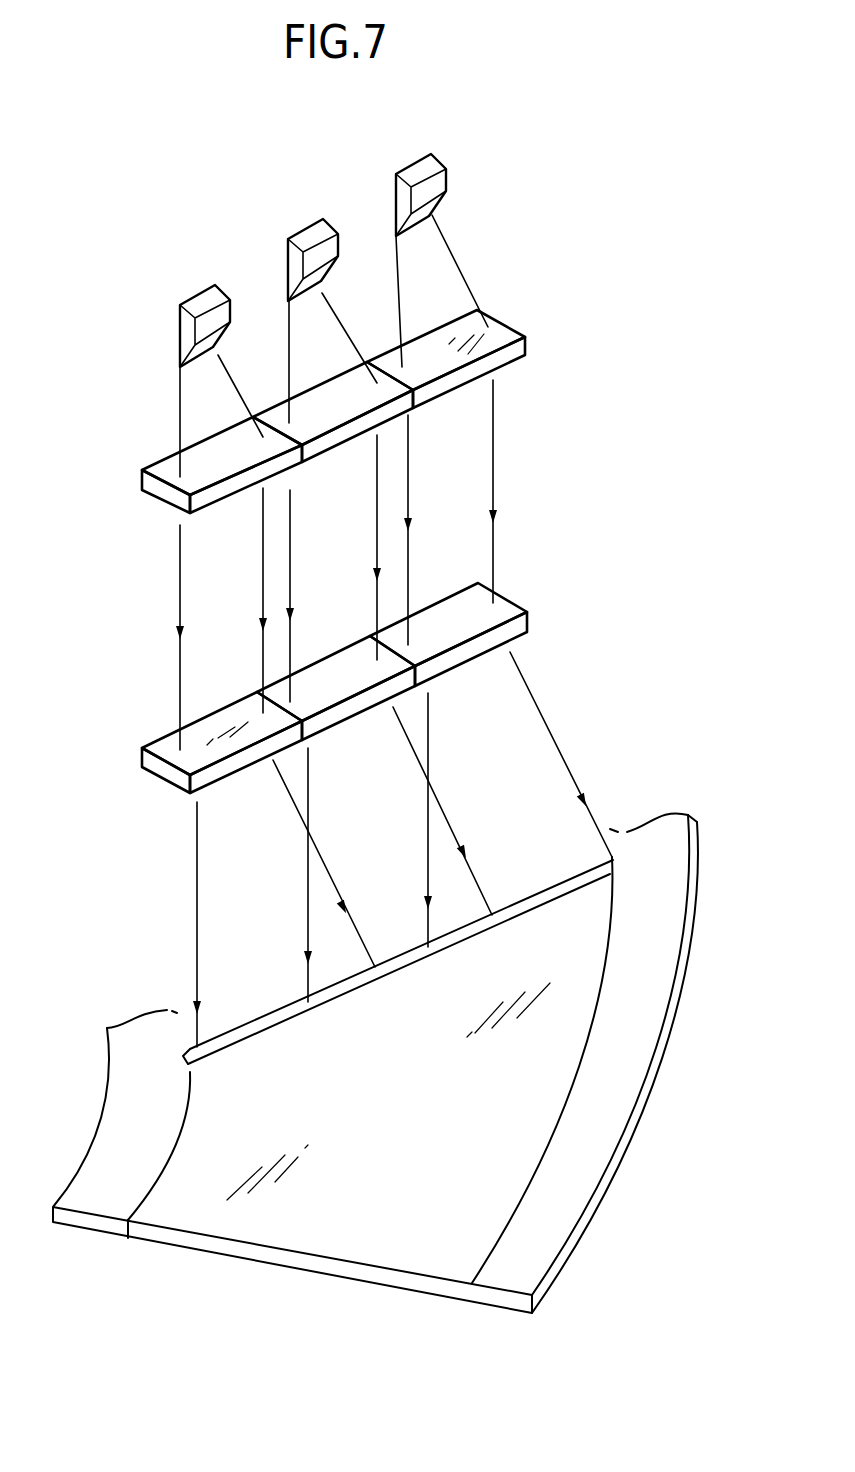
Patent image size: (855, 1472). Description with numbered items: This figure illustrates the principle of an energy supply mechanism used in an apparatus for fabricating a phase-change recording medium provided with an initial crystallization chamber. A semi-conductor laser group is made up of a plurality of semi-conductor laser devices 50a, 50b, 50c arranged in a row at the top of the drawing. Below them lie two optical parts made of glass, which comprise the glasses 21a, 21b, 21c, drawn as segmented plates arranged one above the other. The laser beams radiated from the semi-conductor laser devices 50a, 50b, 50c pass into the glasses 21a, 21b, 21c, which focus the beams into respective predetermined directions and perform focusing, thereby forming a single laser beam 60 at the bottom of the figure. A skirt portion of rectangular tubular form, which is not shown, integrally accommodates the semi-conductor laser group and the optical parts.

The semi-conductor laser device 50a is at (417, 170).
The semi-conductor laser device 50b is at (310, 235).
The semi-conductor laser device 50c is at (202, 300).
The glass 21a is at (497, 333).
The glass 21b is at (347, 397).
The glass 21c is at (218, 463).
The single laser beam 60 is at (563, 898).